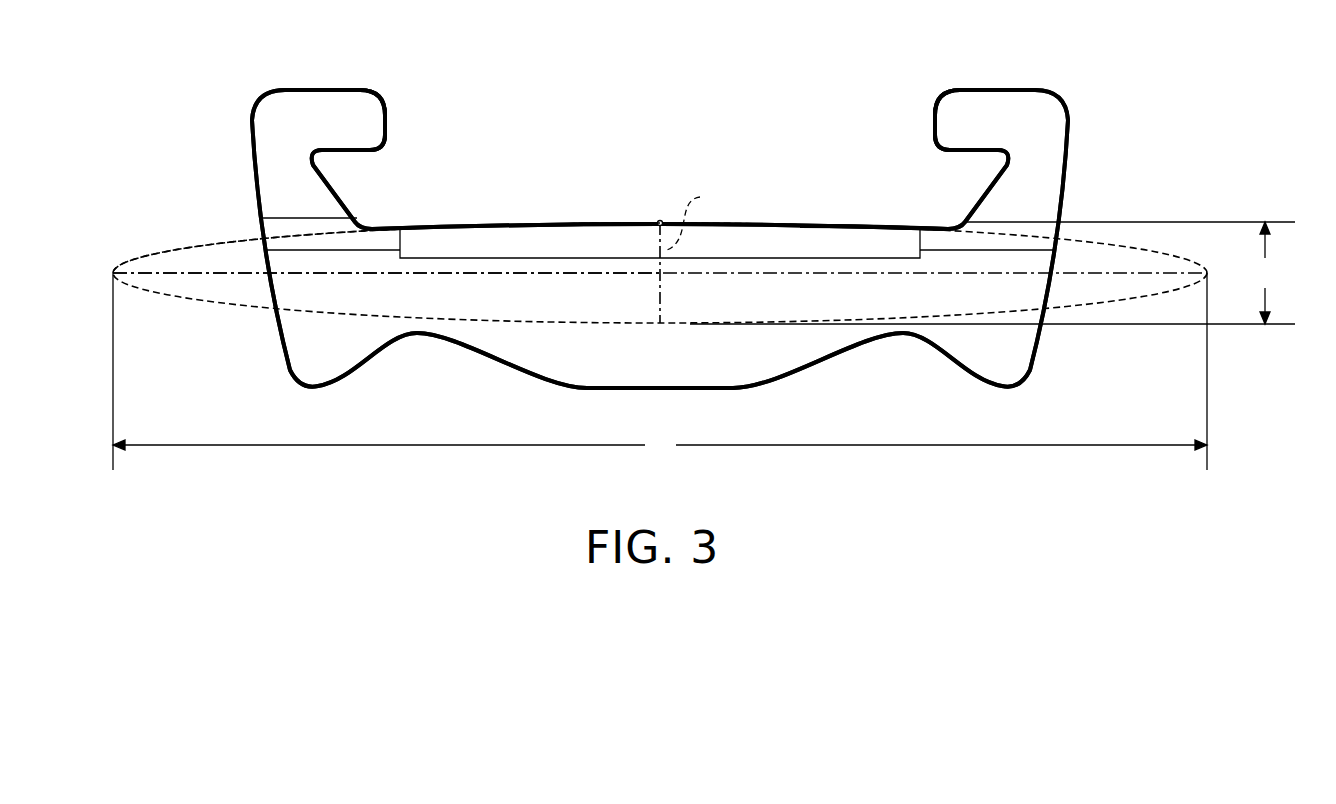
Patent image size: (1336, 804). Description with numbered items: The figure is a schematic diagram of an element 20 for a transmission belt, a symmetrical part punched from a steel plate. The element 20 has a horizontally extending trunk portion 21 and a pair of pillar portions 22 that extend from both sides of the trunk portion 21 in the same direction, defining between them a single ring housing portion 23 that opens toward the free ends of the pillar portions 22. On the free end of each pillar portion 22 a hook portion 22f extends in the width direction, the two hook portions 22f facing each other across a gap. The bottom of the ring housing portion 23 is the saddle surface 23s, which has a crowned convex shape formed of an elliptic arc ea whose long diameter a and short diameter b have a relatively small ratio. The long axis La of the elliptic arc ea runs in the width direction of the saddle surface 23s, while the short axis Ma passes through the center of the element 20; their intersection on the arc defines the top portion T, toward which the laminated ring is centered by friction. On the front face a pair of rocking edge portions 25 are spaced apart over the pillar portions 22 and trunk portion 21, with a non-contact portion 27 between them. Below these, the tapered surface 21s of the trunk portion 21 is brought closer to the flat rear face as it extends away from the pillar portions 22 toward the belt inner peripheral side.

The element 20 is at (1040, 335).
The trunk portion 21 is at (780, 347).
The tapered surface 21s is at (533, 310).
The pillar portion 22 is at (260, 150).
The hook portion 22f is at (373, 127).
The ring housing portion 23 is at (500, 207).
The saddle surface 23s is at (840, 228).
The rocking edge portion 25 is at (285, 232).
The non-contact portion 27 is at (613, 242).
The top portion T is at (657, 222).
The short axis Ma is at (705, 214).
The elliptic arc ea is at (150, 250).
The long axis La is at (212, 277).
The long diameter a is at (660, 445).
The short diameter b is at (1265, 273).